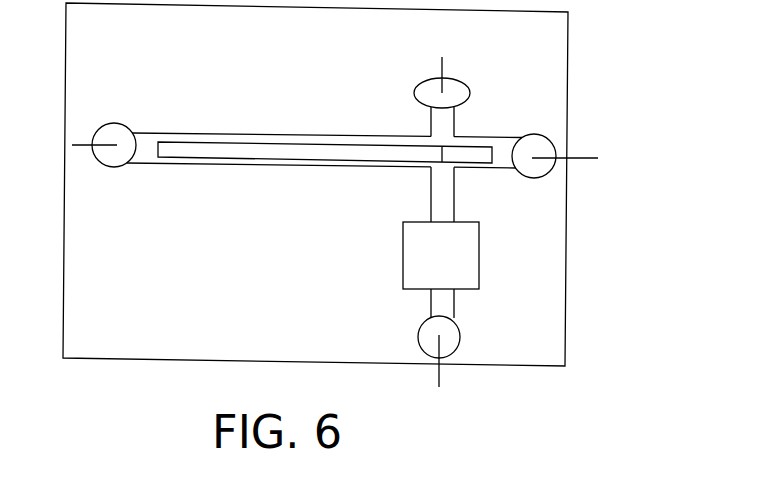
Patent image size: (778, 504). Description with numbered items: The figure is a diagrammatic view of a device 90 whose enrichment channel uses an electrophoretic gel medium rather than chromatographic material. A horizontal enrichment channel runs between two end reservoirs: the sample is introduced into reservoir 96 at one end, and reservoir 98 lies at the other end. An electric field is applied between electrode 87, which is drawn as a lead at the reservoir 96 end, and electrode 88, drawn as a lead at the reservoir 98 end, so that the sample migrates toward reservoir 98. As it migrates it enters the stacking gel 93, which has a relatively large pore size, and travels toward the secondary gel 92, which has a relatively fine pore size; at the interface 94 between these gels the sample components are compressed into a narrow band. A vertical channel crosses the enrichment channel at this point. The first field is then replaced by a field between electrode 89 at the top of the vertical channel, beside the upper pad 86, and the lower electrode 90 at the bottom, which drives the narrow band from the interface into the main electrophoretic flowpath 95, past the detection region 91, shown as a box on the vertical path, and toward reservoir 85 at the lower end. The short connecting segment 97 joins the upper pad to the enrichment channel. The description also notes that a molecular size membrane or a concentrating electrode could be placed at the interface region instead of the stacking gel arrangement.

The reservoir 85 is at (450, 330).
The top contact pad 86 is at (453, 85).
The electrode 87 is at (577, 160).
The electrode 88 is at (90, 146).
The electrode 89 is at (442, 57).
The device 90 is at (602, 86).
The detection region 91 is at (462, 267).
The secondary gel 92 is at (372, 155).
The stacking gel 93 is at (468, 153).
The interface 94 is at (442, 168).
The main electrophoretic flowpath 95 is at (448, 208).
The reservoir 96 is at (539, 168).
The upper vertical channel 97 is at (466, 137).
The reservoir 98 is at (112, 163).